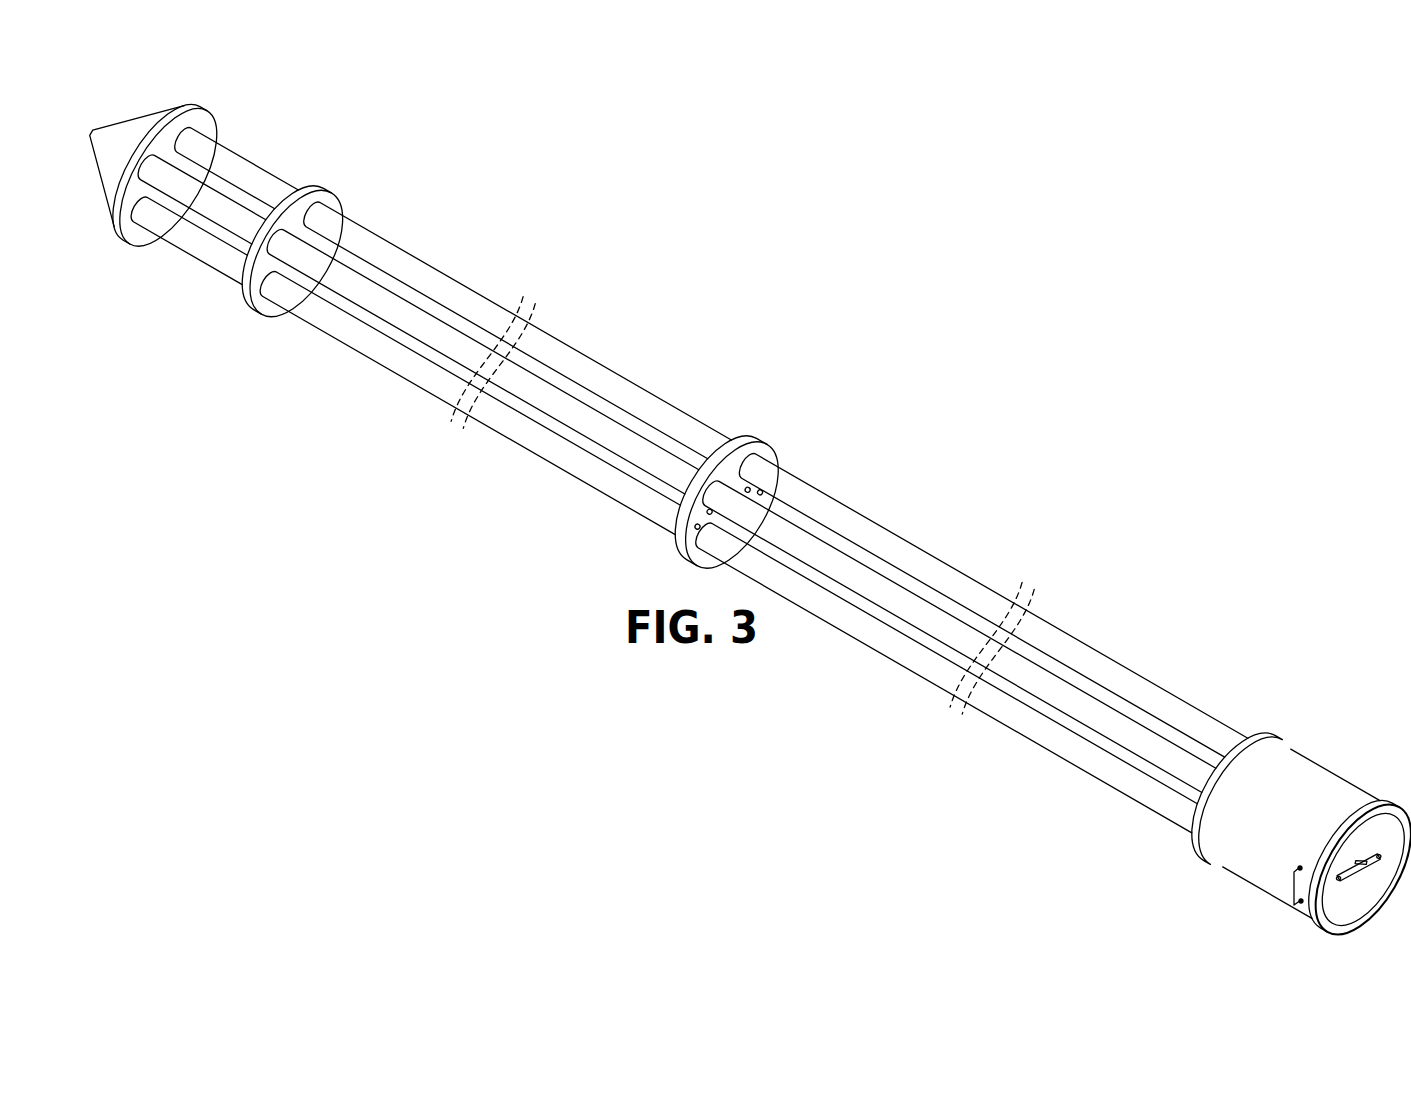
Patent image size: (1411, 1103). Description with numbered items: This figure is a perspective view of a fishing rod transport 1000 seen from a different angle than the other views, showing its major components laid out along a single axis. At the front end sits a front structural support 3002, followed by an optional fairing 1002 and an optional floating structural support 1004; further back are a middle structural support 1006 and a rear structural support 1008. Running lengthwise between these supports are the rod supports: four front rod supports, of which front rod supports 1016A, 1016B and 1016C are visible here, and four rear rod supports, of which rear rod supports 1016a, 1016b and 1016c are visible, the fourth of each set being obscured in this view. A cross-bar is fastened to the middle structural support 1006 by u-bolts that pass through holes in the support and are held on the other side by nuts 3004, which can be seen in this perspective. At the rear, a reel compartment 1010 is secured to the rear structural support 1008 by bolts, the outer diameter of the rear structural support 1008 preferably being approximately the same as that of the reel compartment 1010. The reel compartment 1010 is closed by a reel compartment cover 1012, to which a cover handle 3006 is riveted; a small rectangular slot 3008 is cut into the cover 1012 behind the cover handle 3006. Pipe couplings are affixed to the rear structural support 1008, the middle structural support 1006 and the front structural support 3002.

The fishing rod transport 1000 is at (808, 397).
The fairing 1002 is at (190, 100).
The floating structural support 1004 is at (318, 186).
The middle structural support 1006 is at (748, 436).
The rear structural support 1008 is at (1260, 735).
The reel compartment 1010 is at (1328, 770).
The reel compartment cover 1012 is at (1326, 932).
The front rod support 1016A is at (405, 378).
The front rod support 1016B is at (447, 312).
The front rod support 1016C is at (430, 262).
The rear rod support 1016a is at (1096, 780).
The rear rod support 1016b is at (1128, 712).
The rear rod support 1016c is at (1115, 655).
The front structural support 3002 is at (128, 208).
The nuts 3004 is at (762, 462).
The cover handle 3006 is at (1370, 880).
The slot 3008 is at (1357, 858).